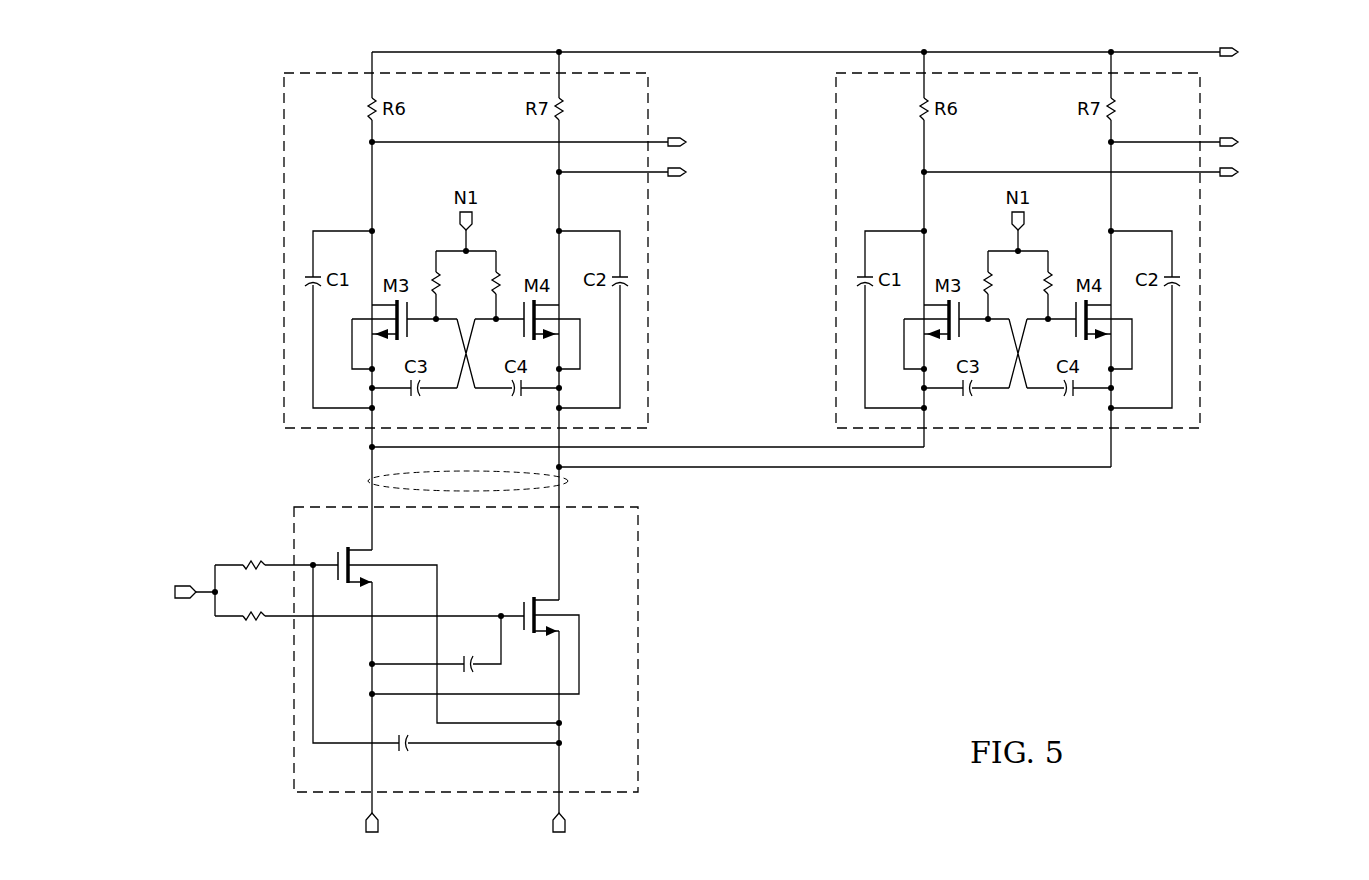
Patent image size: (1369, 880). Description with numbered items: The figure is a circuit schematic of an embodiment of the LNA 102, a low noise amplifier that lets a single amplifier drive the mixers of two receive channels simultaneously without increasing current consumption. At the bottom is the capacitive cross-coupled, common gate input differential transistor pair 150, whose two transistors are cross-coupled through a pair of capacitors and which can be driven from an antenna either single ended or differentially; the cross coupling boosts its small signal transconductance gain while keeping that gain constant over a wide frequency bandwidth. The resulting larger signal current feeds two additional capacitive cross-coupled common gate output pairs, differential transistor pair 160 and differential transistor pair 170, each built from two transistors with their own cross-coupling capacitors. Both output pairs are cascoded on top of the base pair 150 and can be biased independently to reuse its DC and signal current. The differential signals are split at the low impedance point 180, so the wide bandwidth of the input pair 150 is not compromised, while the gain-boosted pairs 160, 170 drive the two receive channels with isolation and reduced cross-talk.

The LNA 102 is at (739, 452).
The common gate input differential transistor pair 150 is at (288, 695).
The cross-coupled differential transistor pair 160 is at (280, 237).
The cross-coupled differential transistor pair 170 is at (1206, 334).
The low impedance point 180 is at (366, 484).